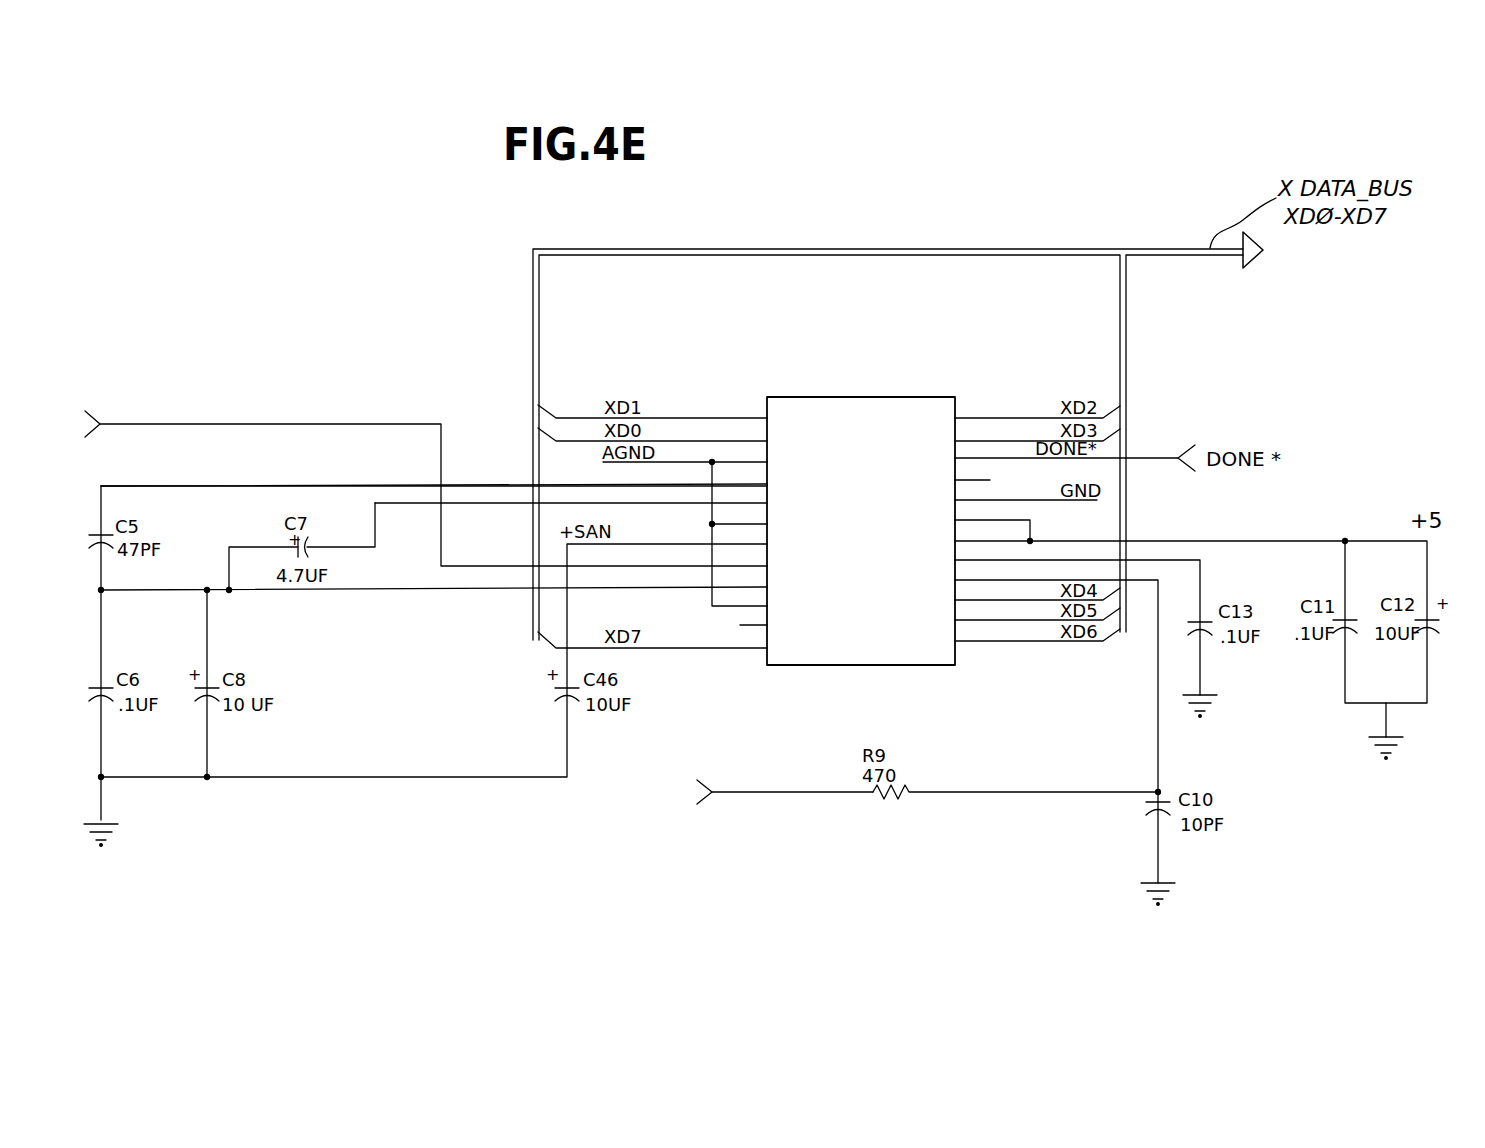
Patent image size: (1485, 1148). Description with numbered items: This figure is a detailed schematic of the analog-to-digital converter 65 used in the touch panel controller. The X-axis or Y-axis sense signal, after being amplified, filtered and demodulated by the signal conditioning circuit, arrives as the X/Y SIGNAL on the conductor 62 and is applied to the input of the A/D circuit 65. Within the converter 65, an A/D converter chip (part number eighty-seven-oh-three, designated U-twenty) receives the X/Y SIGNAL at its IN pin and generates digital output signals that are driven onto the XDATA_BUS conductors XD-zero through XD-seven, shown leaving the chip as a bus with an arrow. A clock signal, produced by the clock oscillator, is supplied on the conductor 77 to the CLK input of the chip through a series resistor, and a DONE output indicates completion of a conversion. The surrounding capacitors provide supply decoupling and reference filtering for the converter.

The conductor 62 is at (133, 421).
The analog-to-digital converter 65 is at (506, 372).
The conductor 77 is at (786, 777).